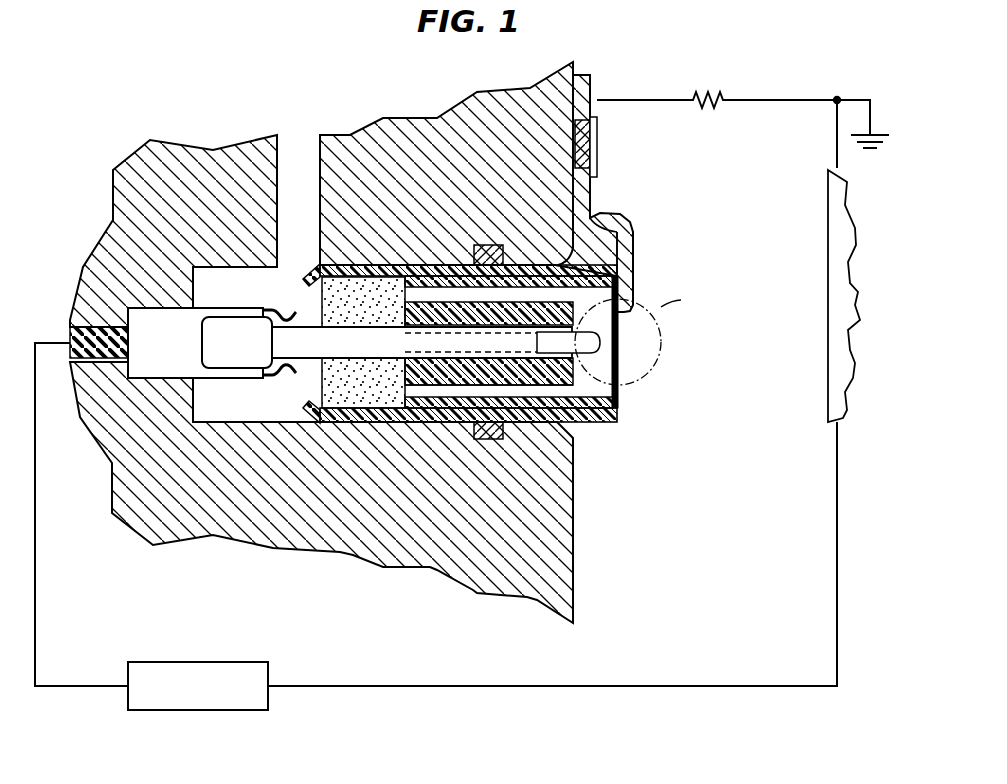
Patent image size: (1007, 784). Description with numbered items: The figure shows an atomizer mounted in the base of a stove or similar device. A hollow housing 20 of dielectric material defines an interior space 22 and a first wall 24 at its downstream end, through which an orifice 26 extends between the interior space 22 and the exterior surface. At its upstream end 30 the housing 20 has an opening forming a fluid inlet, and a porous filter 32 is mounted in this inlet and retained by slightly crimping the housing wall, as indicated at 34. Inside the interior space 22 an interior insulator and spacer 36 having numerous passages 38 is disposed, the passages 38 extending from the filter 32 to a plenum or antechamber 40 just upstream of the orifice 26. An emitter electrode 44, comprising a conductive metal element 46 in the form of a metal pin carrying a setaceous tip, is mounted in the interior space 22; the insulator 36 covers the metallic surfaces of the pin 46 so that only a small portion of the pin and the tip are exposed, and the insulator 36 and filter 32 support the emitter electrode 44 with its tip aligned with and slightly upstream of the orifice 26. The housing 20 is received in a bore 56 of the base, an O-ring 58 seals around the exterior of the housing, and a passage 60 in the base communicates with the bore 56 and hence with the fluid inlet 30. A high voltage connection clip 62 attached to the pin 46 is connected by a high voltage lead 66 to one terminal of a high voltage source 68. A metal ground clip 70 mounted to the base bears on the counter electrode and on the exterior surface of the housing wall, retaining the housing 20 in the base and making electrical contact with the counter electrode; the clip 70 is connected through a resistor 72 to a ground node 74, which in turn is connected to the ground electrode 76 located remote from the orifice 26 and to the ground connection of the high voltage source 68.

The hollow housing 20 is at (598, 438).
The interior space 22 is at (615, 403).
The first wall 24 is at (617, 377).
The orifice 26 is at (620, 346).
The upstream end 30 is at (320, 303).
The porous filter 32 is at (353, 287).
The crimp 34 is at (318, 442).
The interior insulator and spacer 36 is at (622, 272).
The passages 38 is at (577, 245).
The plenum or antechamber 40 is at (597, 290).
The emitter electrode 44 is at (458, 368).
The conductive metal element 46 is at (367, 337).
The bore 56 is at (240, 423).
The O-ring 58 is at (475, 258).
The passage 60 is at (290, 130).
The high voltage connection clip 62 is at (148, 316).
The high voltage lead 66 is at (35, 565).
The high voltage source 68 is at (198, 711).
The metal ground clip 70 is at (632, 220).
The resistor 72 is at (710, 91).
The ground node 74 is at (838, 97).
The ground electrode 76 is at (858, 292).